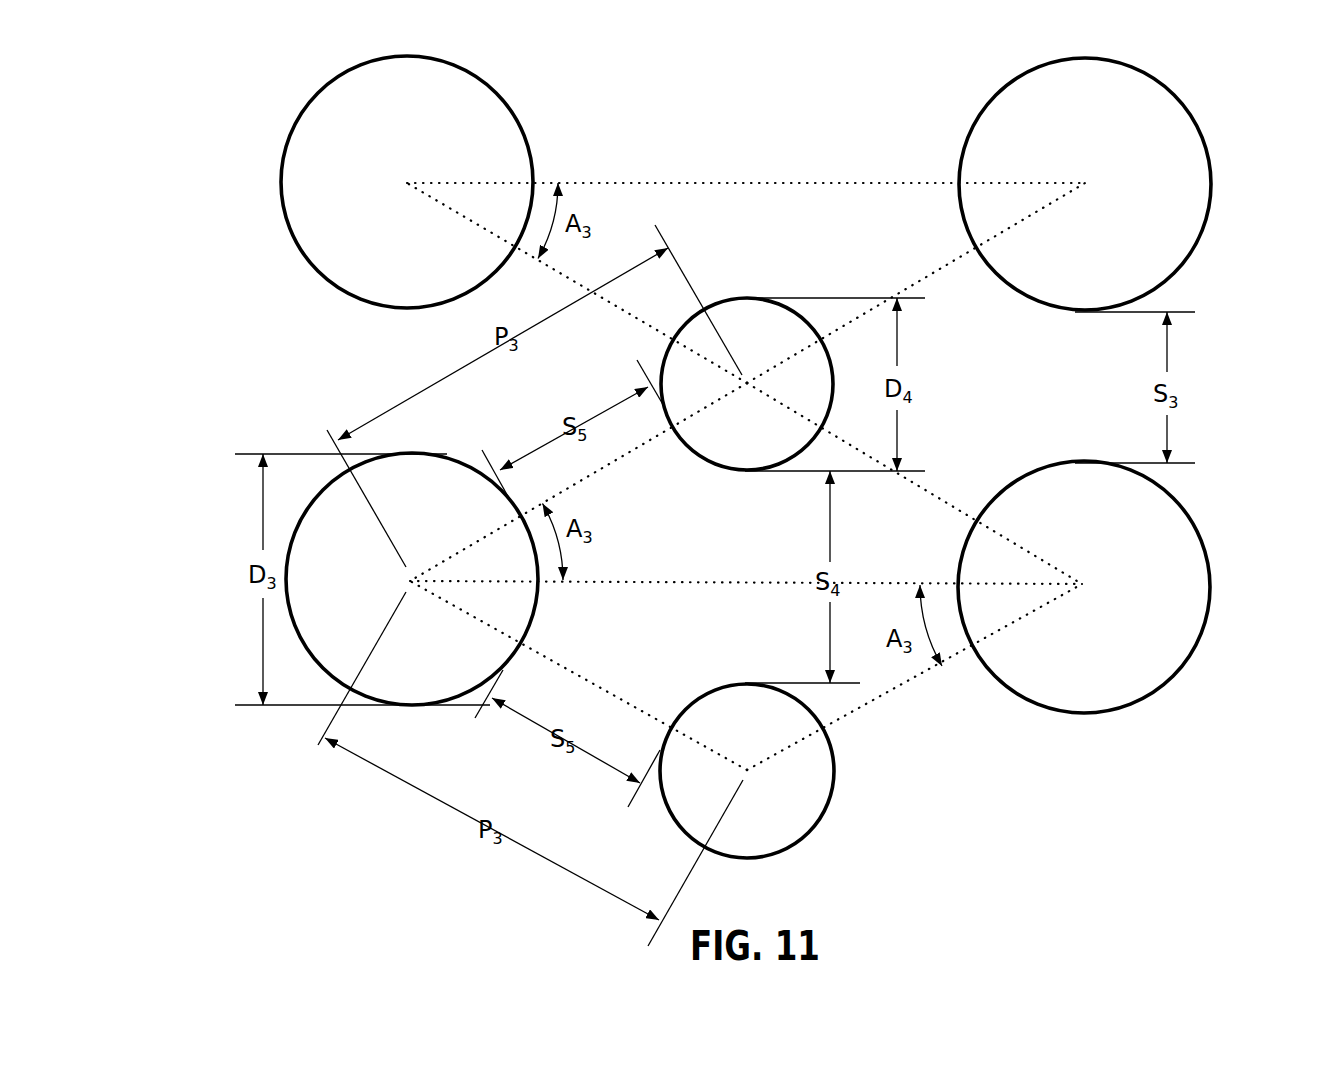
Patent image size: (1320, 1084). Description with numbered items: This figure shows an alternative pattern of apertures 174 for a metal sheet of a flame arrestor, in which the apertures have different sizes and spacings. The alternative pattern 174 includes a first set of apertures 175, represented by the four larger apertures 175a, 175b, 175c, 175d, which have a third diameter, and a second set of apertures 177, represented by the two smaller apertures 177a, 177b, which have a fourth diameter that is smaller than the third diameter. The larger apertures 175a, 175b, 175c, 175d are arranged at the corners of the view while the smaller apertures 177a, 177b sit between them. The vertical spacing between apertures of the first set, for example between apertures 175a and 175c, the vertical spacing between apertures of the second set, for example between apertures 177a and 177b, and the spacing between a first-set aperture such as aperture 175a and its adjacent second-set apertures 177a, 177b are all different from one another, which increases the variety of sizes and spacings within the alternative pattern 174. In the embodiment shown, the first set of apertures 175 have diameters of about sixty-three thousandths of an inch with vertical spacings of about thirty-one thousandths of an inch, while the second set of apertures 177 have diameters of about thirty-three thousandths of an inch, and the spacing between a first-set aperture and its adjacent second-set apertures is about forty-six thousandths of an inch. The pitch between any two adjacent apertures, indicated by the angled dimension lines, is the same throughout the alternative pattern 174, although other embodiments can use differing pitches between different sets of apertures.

The alternative pattern of apertures 174 is at (207, 80).
The first set of apertures 175 is at (1068, 758).
The aperture 175a is at (447, 455).
The aperture 175b is at (1188, 518).
The aperture 175c is at (302, 258).
The aperture 175d is at (1187, 110).
The second set of apertures 177 is at (755, 165).
The aperture 177a is at (723, 298).
The aperture 177b is at (808, 832).